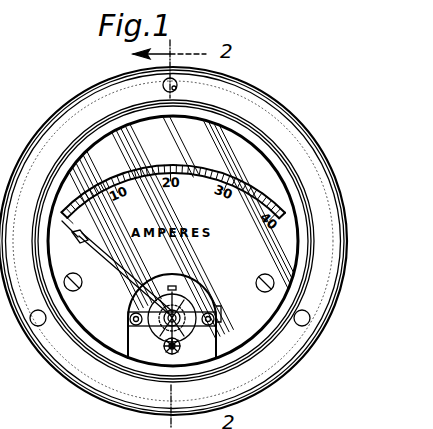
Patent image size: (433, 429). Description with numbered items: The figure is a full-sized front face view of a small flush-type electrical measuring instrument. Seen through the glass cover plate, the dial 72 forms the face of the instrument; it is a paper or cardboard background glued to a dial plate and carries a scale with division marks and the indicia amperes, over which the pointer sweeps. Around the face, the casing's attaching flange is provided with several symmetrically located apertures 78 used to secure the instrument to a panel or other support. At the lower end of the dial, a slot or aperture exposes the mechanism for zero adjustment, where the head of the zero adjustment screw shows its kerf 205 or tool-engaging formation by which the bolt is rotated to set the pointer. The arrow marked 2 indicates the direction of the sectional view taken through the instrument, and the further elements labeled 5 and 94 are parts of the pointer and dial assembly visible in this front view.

The pointer 5 is at (78, 238).
The dial 72 is at (222, 114).
The apertures 78 is at (177, 84).
The dial plate ring 94 is at (58, 258).
The kerf 205 is at (167, 348).